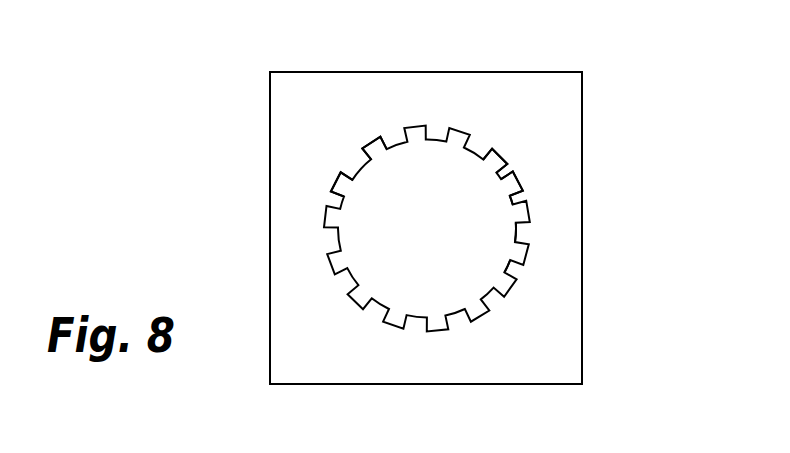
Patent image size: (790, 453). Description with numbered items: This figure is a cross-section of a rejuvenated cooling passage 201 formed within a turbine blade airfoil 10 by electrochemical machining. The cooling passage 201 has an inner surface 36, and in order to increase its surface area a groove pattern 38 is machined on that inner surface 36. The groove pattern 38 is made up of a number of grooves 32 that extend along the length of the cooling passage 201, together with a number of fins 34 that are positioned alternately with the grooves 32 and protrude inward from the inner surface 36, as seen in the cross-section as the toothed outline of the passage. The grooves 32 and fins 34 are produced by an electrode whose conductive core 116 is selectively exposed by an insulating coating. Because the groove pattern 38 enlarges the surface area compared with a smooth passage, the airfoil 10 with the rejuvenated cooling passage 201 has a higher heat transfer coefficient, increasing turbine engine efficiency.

The turbine blade airfoil 10 is at (553, 337).
The rejuvenated cooling passage 201 is at (428, 176).
The grooves 32 is at (337, 173).
The fins 34 is at (356, 163).
The inner surface 36 is at (483, 157).
The conductive core 116 is at (492, 194).
The groove pattern 38 is at (521, 285).